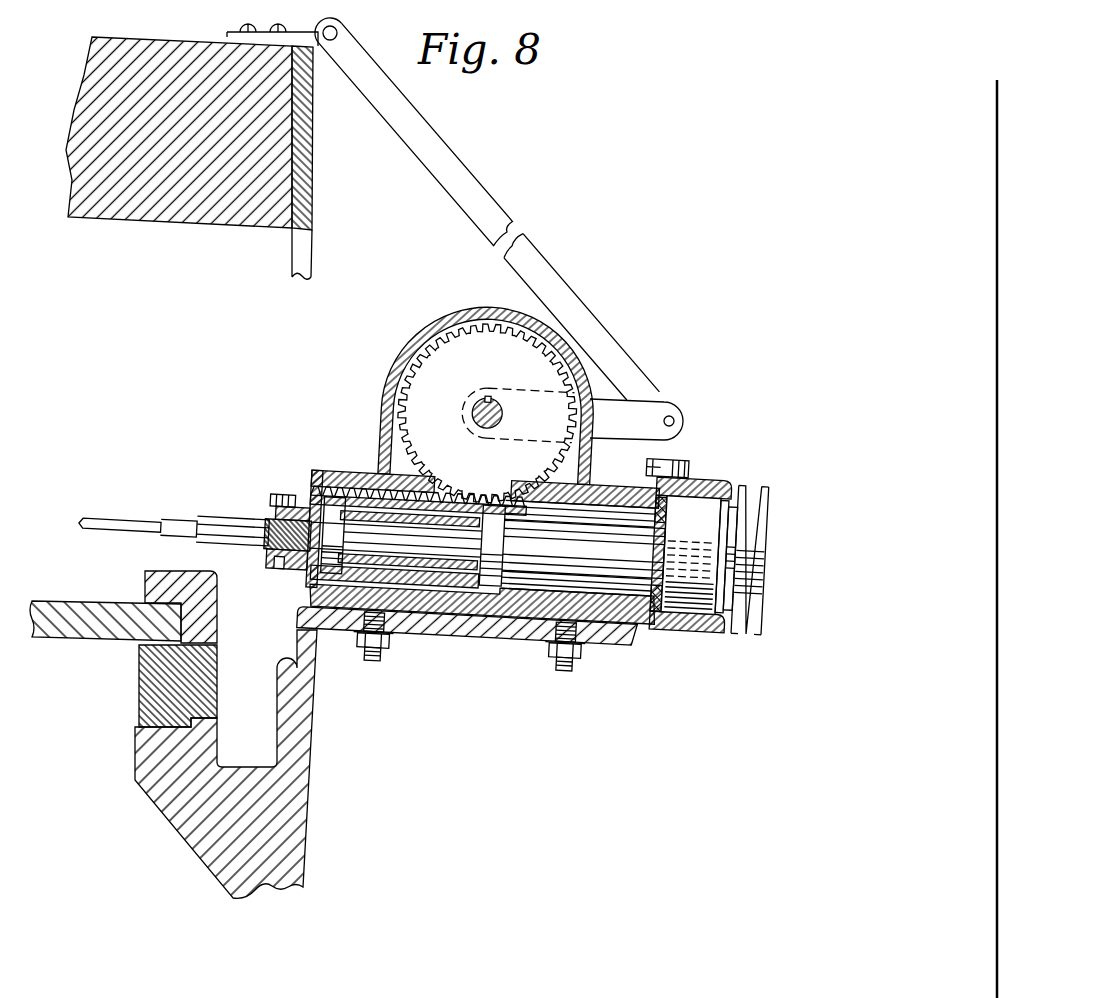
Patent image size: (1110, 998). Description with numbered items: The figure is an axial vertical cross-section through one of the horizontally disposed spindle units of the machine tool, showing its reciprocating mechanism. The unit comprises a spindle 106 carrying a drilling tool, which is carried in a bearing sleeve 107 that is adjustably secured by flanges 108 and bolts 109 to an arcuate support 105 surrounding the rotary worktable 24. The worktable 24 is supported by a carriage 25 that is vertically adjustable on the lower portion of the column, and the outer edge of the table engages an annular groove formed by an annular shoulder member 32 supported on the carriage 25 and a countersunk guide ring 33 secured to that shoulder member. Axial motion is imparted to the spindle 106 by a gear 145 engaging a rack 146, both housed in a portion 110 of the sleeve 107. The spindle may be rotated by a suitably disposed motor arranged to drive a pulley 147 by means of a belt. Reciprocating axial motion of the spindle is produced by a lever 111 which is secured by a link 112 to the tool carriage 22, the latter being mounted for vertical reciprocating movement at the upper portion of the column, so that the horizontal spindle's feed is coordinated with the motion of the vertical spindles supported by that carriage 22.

The tool carriage 22 is at (168, 208).
The rotary worktable 24 is at (105, 645).
The carriage 25 is at (197, 810).
The annular shoulder member 32 is at (158, 698).
The countersunk guide ring 33 is at (158, 580).
The arcuate supports 105 is at (517, 630).
The spindle 106 is at (222, 527).
The bearing sleeve 107 is at (337, 468).
The flanges 108 is at (458, 600).
The bolts 109 is at (372, 662).
The portion of the sleeve 110 is at (412, 345).
The lever 111 is at (640, 420).
The link 112 is at (548, 270).
The gear 145 is at (465, 343).
The rack 146 is at (358, 492).
The pulley 147 is at (758, 520).